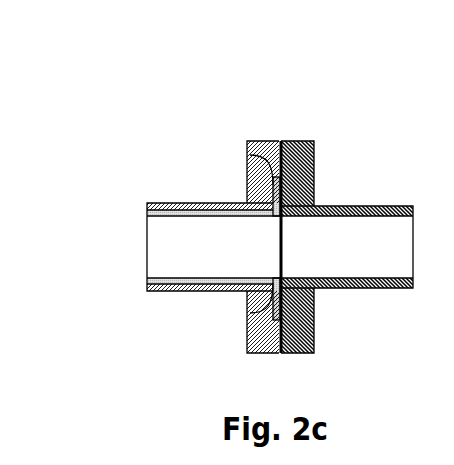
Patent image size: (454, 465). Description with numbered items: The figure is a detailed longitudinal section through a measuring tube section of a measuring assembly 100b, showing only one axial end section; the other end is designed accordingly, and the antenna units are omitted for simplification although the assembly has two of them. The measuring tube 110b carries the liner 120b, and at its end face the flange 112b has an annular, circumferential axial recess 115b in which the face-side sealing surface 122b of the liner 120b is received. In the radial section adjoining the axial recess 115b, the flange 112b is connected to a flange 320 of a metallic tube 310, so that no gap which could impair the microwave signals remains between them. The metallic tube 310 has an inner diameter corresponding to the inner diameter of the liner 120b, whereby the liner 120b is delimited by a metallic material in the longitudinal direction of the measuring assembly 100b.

The measuring assembly 100b is at (171, 71).
The pipe 110b is at (165, 203).
The liner 120b is at (202, 213).
The flange 112b is at (266, 141).
The axial recess 115b is at (253, 155).
The face-side sealing surface 122b is at (253, 313).
The flange 320 is at (315, 170).
The metallic tube 310 is at (370, 206).